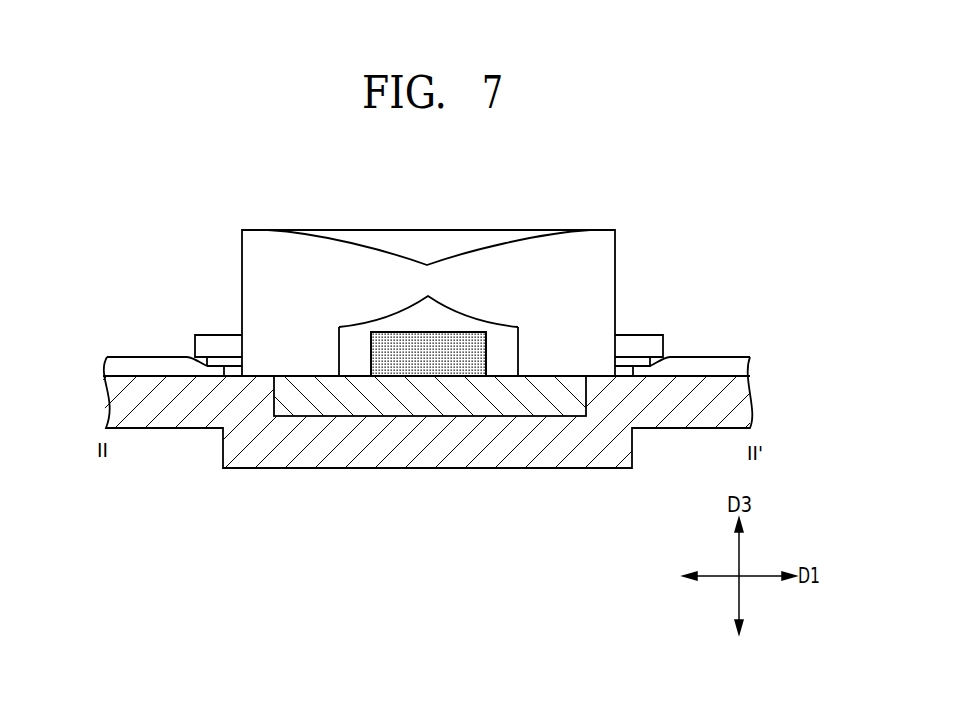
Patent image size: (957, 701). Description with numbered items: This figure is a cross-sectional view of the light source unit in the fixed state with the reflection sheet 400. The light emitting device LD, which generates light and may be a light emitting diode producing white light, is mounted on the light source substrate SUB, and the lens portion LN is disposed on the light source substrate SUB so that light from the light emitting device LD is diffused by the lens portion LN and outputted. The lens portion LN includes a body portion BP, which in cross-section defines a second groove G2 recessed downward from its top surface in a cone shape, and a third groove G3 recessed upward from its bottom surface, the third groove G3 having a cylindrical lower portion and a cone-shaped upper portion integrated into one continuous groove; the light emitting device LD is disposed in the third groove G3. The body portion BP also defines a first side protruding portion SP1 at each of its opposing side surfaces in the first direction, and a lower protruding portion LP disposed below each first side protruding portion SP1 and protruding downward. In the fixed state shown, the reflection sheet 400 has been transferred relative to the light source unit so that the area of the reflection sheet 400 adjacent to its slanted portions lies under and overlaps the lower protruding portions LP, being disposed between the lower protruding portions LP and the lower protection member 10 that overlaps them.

The lower protection member 10 is at (742, 402).
The light source substrate SUB is at (372, 400).
The reflection sheet 400 is at (738, 368).
The lower protruding portion LP is at (640, 362).
The first side protruding portion SP1 is at (655, 347).
The body portion BP is at (617, 294).
The lens portion LN is at (602, 263).
The second groove G2 is at (481, 248).
The third groove G3 is at (465, 317).
The light emitting device LD is at (427, 362).